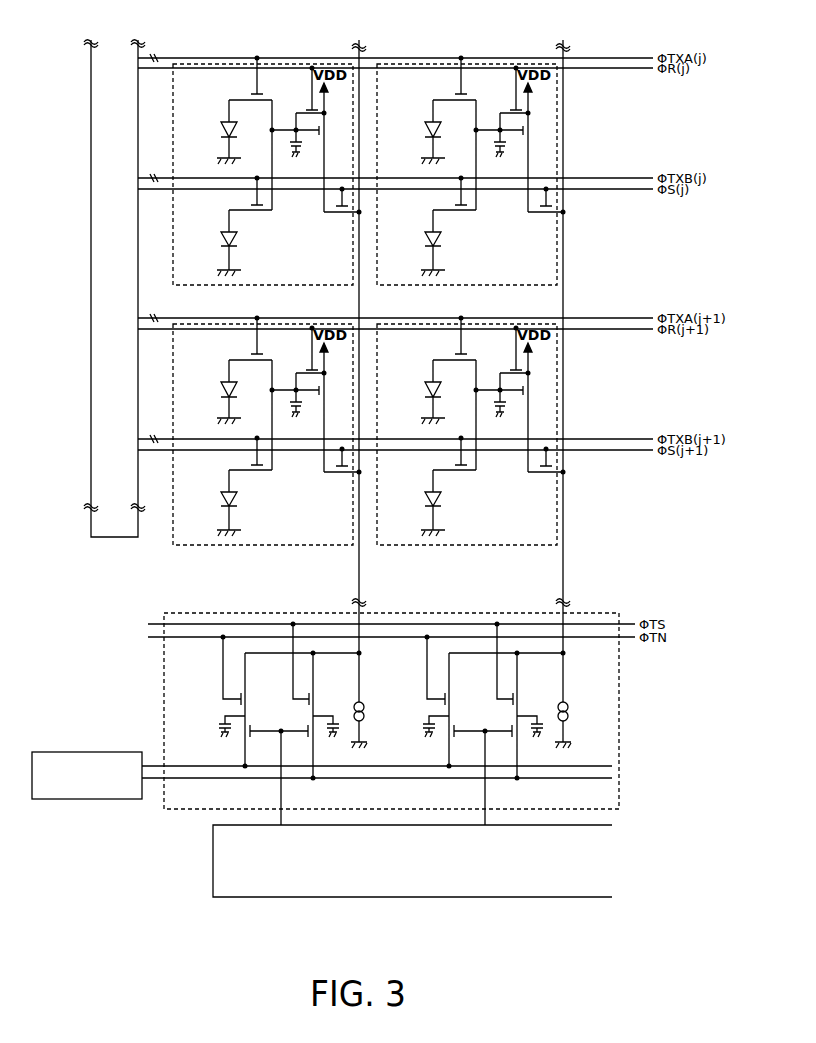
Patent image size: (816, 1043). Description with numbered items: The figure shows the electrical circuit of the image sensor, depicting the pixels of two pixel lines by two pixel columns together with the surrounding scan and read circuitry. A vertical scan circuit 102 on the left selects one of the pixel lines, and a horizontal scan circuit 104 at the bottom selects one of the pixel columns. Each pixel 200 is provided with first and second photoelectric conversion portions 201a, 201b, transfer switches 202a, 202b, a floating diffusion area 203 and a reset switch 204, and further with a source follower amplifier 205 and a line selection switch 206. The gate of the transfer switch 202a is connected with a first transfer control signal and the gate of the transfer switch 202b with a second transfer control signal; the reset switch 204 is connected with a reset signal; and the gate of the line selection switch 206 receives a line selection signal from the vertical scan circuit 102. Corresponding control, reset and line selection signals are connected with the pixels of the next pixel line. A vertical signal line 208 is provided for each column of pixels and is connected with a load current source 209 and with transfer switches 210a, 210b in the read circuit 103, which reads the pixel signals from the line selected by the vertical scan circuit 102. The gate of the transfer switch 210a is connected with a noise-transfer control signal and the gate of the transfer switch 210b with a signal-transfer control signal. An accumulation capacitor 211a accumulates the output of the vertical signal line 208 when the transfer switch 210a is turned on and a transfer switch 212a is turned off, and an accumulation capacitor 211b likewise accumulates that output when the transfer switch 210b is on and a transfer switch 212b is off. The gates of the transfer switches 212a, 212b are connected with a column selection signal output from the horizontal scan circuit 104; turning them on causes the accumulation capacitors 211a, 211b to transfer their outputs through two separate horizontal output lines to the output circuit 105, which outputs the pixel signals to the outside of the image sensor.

The vertical scan circuit 102 is at (91, 230).
The read circuit 103 is at (619, 734).
The horizontal scan circuit 104 is at (213, 857).
The output circuit 105 is at (117, 752).
The pixel 200 is at (224, 286).
The first photoelectric conversion portion 201a is at (225, 127).
The second photoelectric conversion portion 201b is at (223, 240).
The transfer switch 202a is at (253, 93).
The transfer switch 202b is at (255, 213).
The floating diffusion area 203 is at (300, 140).
The reset switch 204 is at (307, 109).
The source follower amplifier 205 is at (329, 130).
The line selection switch 206 is at (342, 213).
The vertical signal line 208 is at (362, 54).
The load current source 209 is at (364, 706).
The transfer switch 210a is at (241, 698).
The transfer switch 210b is at (309, 698).
The accumulation capacitor 211a is at (221, 721).
The accumulation capacitor 211b is at (337, 721).
The transfer switch 212a is at (250, 739).
The transfer switch 212b is at (310, 728).